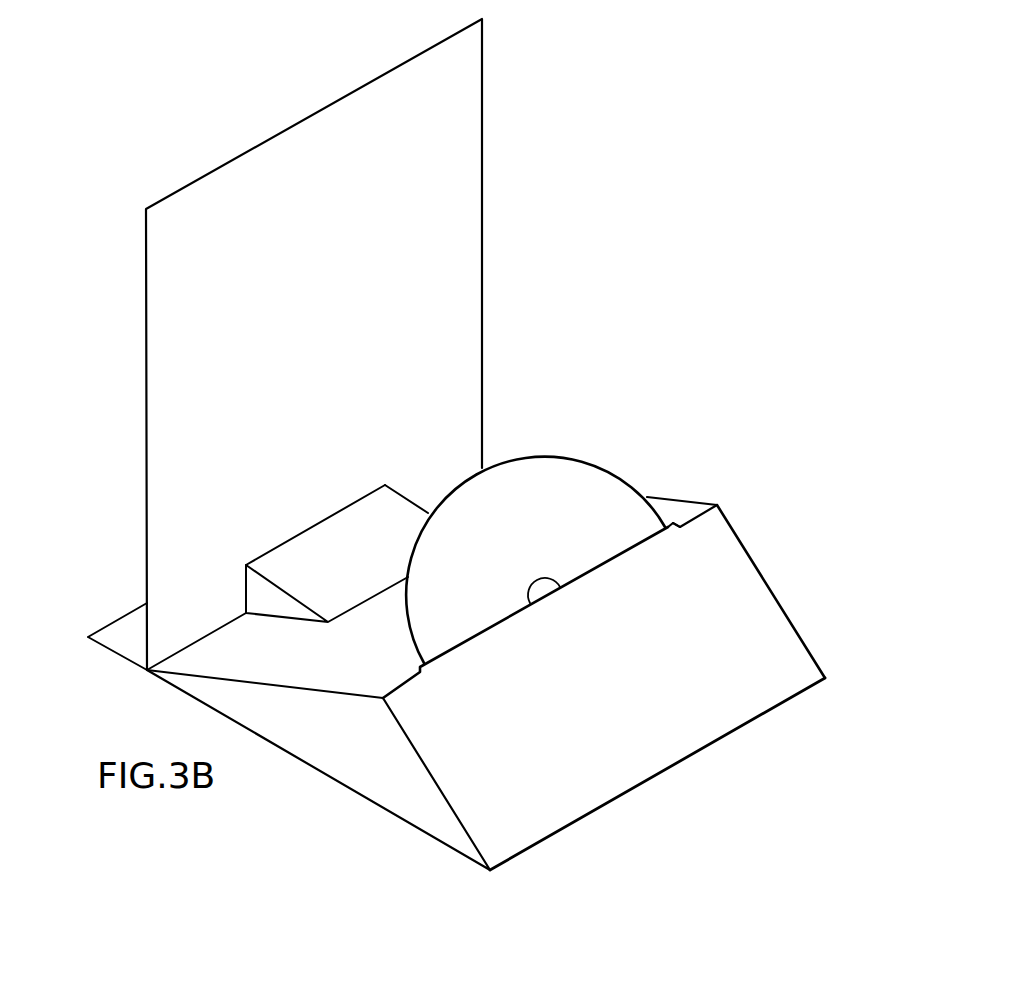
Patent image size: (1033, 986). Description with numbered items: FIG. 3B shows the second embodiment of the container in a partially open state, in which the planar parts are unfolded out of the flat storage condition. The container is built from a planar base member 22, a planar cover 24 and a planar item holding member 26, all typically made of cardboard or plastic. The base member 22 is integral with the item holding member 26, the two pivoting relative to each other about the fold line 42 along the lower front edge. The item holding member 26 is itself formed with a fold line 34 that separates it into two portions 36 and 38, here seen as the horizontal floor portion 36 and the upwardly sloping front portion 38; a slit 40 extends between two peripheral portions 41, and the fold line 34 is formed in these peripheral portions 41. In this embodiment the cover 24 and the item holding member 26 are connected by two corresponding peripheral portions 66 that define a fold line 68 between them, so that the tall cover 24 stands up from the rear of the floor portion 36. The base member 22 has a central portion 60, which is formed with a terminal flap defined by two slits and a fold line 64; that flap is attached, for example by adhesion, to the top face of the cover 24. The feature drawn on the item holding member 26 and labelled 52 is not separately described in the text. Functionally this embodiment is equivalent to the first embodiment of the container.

The base member 22 is at (333, 740).
The cover 24 is at (305, 343).
The item holding member 26 is at (643, 468).
The fold line 34 is at (695, 518).
The portion of item holding member 36 is at (340, 668).
The portion of item holding member 38 is at (605, 726).
The slit 40 is at (604, 556).
The peripheral portion 41 is at (689, 517).
The fold line 42 is at (647, 783).
The disc surface 52 is at (558, 473).
The central portion 60 is at (355, 578).
The fold line 64 is at (263, 553).
The peripheral portion 66 is at (183, 630).
The fold line 68 is at (215, 623).